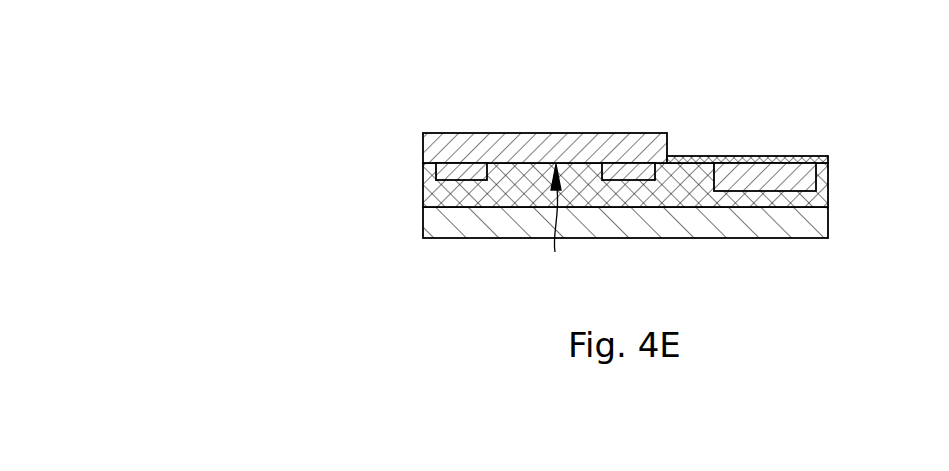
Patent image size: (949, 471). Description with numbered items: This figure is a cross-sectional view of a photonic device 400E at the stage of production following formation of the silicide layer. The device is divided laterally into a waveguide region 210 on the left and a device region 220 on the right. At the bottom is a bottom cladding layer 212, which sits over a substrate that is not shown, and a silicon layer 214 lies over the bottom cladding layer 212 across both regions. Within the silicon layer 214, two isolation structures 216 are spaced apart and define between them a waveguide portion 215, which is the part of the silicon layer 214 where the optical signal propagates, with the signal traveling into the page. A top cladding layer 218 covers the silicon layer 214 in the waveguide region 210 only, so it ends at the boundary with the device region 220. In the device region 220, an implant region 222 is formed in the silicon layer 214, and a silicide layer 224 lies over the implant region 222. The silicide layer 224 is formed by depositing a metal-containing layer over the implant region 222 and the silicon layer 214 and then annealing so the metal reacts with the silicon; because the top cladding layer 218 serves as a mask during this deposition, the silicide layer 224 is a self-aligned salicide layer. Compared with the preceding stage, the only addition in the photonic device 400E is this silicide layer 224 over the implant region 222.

The photonic device 400E is at (350, 89).
The waveguide region 210 is at (665, 93).
The device region 220 is at (828, 93).
The bottom cladding layer 212 is at (432, 226).
The silicon layer 214 is at (422, 193).
The waveguide portion 215 is at (552, 226).
The isolation structures 216 is at (434, 173).
The top cladding layer 218 is at (422, 146).
The implant region 222 is at (815, 180).
The silicide layer 224 is at (829, 160).